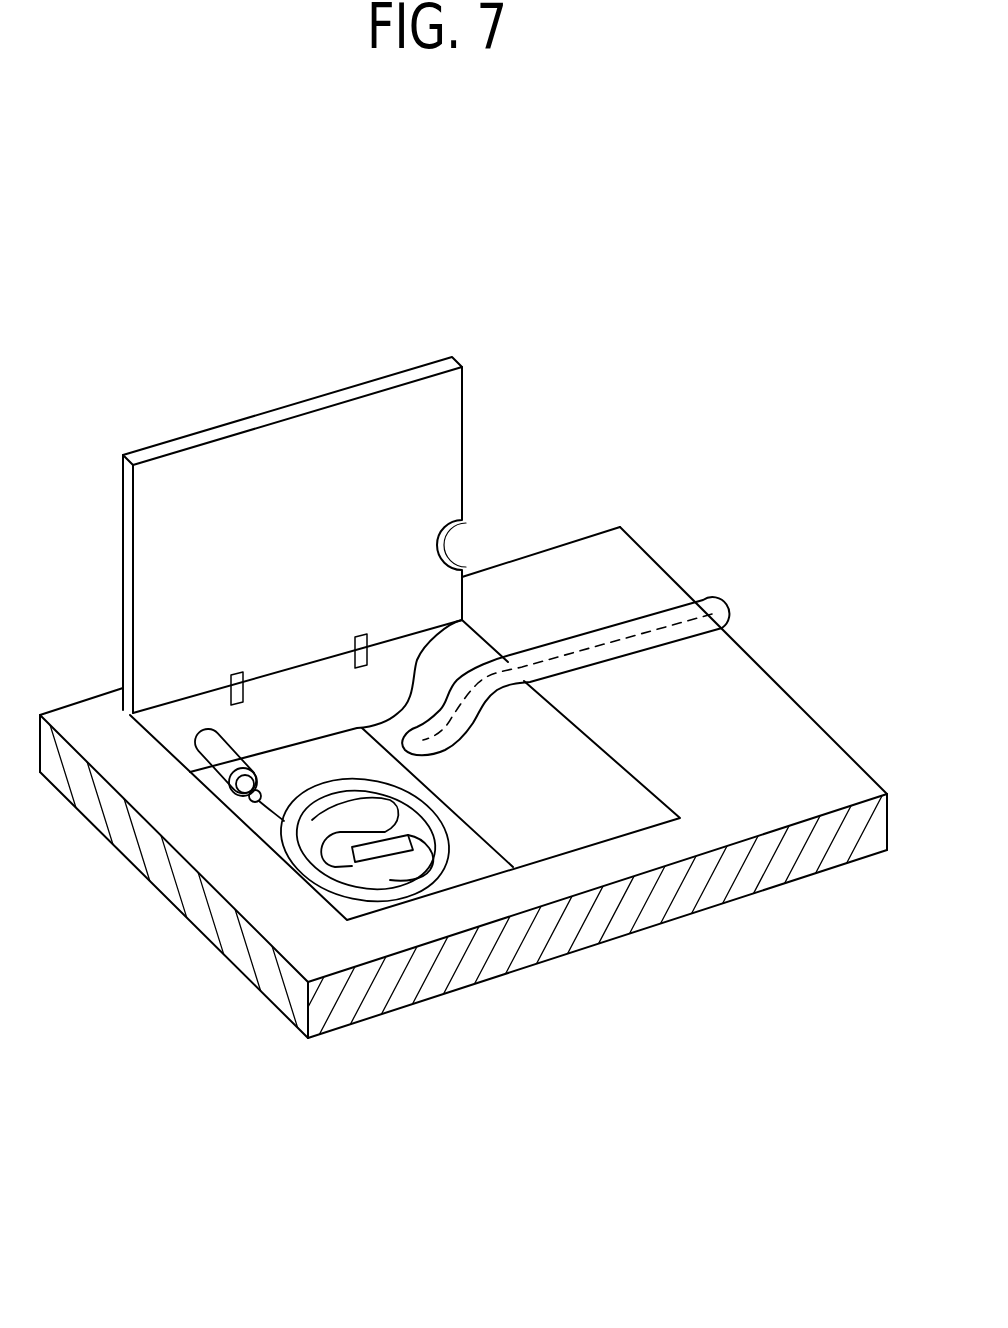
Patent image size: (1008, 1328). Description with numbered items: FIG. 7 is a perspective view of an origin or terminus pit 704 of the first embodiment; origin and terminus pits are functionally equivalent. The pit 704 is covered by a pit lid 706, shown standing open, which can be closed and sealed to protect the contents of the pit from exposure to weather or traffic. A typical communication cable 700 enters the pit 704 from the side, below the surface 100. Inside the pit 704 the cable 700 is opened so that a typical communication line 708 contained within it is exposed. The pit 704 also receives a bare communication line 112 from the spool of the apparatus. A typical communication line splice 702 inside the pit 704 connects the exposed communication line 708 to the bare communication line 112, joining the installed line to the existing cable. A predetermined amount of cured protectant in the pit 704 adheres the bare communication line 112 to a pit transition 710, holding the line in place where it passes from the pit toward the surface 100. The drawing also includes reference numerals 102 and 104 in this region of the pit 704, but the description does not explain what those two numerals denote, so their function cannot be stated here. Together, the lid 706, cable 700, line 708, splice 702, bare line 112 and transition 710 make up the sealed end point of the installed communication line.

The surface 100 is at (757, 765).
The recess 102 is at (443, 727).
The channel 104 is at (483, 690).
The bare communication line 112 is at (383, 757).
The communication cable 700 is at (225, 762).
The communication line splice 702 is at (387, 848).
The pit 704 is at (528, 587).
The pit lid 706 is at (385, 507).
The communication line 708 is at (268, 810).
The pit transition 710 is at (587, 808).